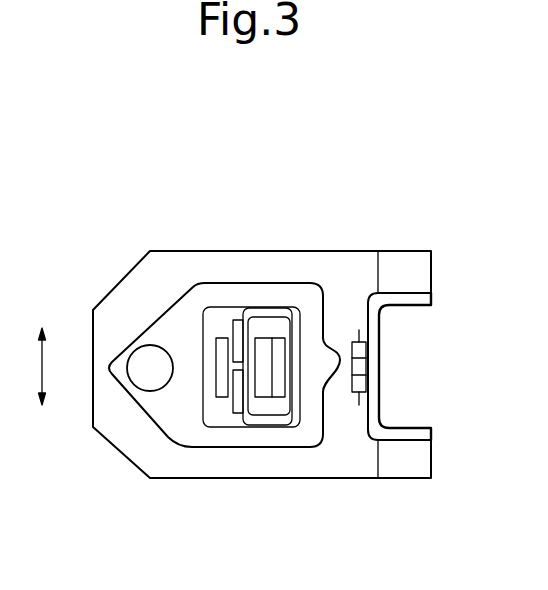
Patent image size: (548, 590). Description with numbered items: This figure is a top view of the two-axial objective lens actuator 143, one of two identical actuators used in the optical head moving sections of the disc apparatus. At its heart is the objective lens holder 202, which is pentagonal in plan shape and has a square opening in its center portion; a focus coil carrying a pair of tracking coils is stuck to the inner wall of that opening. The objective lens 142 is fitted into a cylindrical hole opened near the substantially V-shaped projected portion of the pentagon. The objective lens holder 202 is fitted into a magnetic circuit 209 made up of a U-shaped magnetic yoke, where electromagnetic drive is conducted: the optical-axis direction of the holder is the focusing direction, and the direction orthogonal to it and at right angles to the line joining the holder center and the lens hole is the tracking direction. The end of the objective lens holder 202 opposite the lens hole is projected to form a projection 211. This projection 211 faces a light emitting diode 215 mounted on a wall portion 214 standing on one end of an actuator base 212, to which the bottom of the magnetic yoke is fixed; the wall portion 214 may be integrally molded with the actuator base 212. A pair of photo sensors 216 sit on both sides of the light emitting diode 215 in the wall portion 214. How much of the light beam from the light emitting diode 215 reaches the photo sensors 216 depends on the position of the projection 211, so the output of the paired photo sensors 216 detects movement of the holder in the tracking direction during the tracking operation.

The objective lens 142 is at (147, 377).
The two-axial objective lens actuator 143 is at (317, 200).
The objective lens holder 202 is at (208, 265).
The magnetic circuit 209 is at (280, 387).
The projection 211 is at (332, 378).
The actuator base 212 is at (320, 458).
The wall portion 214 is at (370, 418).
The light emitting diode 215 is at (357, 362).
The photo sensors 216 is at (360, 350).